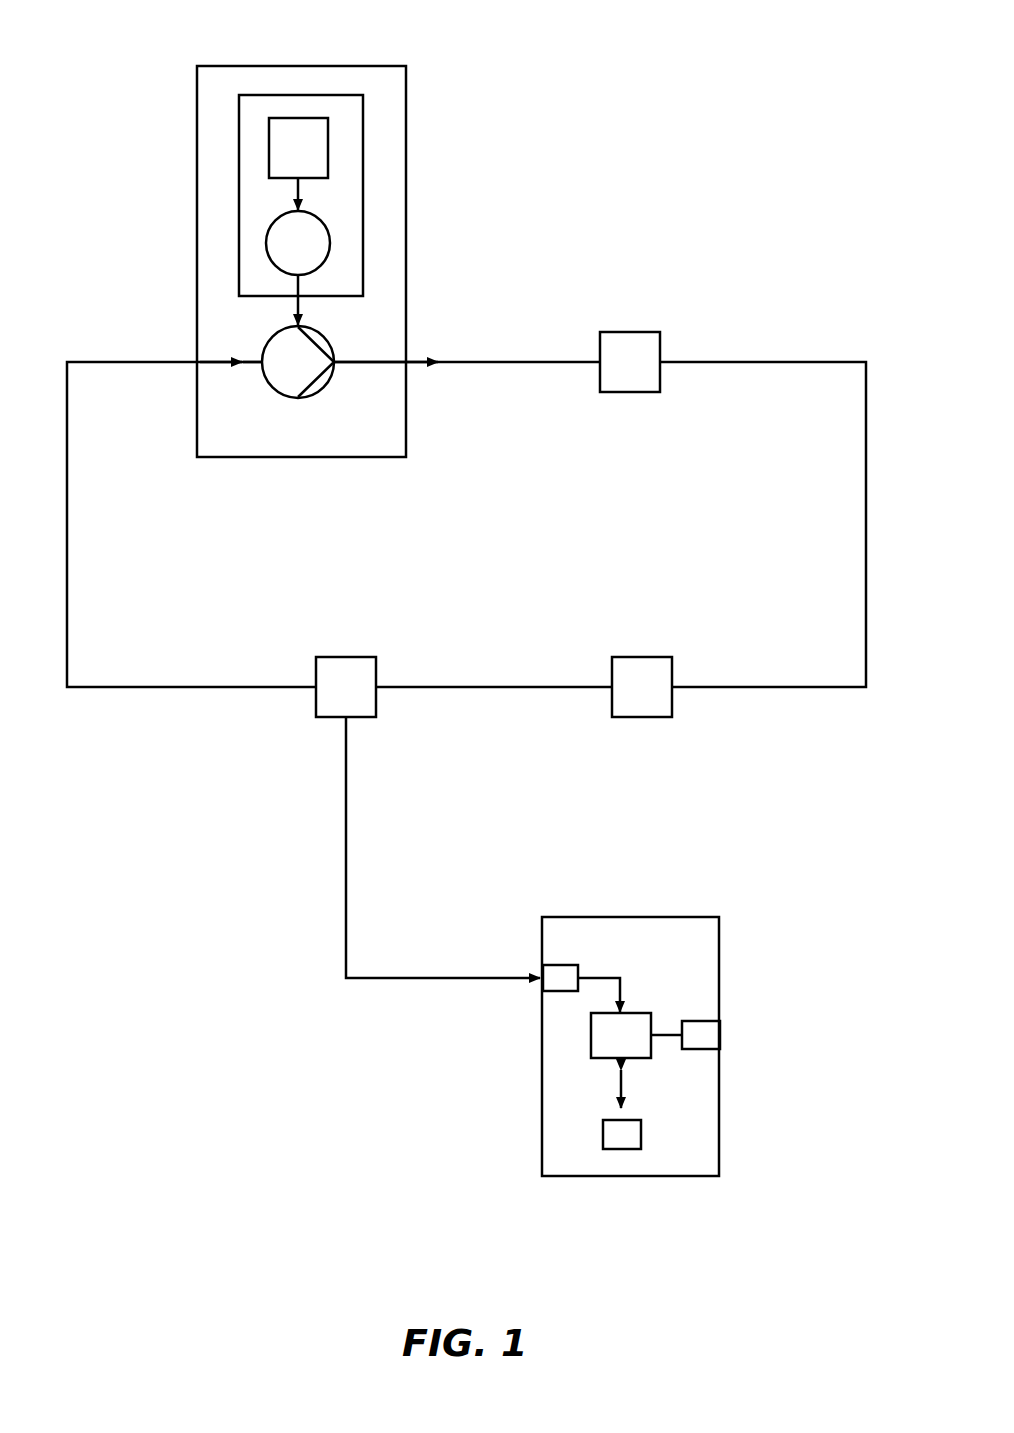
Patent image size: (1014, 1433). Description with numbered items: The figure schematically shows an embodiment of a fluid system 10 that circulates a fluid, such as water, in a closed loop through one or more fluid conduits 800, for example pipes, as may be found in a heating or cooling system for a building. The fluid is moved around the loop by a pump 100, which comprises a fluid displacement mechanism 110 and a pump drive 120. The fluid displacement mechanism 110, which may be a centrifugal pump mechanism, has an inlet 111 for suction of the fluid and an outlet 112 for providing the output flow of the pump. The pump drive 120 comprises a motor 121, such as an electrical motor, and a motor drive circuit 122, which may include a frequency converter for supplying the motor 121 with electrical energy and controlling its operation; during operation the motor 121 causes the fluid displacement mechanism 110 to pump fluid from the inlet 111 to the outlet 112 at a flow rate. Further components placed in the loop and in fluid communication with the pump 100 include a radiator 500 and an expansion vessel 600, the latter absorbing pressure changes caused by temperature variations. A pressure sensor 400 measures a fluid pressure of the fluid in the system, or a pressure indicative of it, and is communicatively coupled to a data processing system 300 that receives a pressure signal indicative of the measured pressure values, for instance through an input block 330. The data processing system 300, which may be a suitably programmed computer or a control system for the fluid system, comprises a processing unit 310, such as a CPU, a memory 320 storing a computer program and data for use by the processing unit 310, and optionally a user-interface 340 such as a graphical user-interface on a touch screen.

The fluid system 10 is at (203, 921).
The pump 100 is at (285, 460).
The fluid displacement mechanism 110 is at (272, 388).
The inlet 111 is at (247, 352).
The outlet 112 is at (352, 366).
The pump drive 120 is at (300, 93).
The motor 121 is at (333, 250).
The motor drive circuit 122 is at (310, 118).
The data processing system 300 is at (633, 1178).
The processing unit 310 is at (630, 1013).
The memory 320 is at (641, 1133).
The input interface 330 is at (560, 965).
The user-interface 340 is at (700, 1021).
The pressure sensor 400 is at (340, 656).
The radiator 500 is at (634, 656).
The expansion vessel 600 is at (632, 394).
The fluid conduit 800 is at (808, 360).